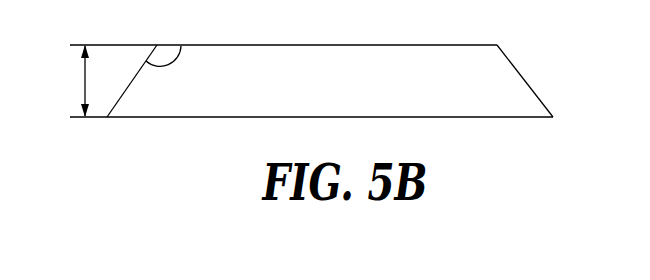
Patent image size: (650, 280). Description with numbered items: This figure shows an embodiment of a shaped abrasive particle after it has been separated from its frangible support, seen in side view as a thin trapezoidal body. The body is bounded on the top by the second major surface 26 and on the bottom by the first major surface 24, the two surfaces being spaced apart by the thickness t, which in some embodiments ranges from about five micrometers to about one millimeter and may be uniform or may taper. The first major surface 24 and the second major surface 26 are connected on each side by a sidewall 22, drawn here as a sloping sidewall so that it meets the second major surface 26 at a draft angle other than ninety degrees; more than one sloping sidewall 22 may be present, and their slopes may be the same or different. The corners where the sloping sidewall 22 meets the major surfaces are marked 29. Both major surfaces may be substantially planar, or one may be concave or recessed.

The sidewall 22 is at (139, 71).
The first major surface 24 is at (447, 117).
The second major surface 26 is at (362, 45).
The edge corners 29 is at (499, 44).
The thickness t is at (85, 78).